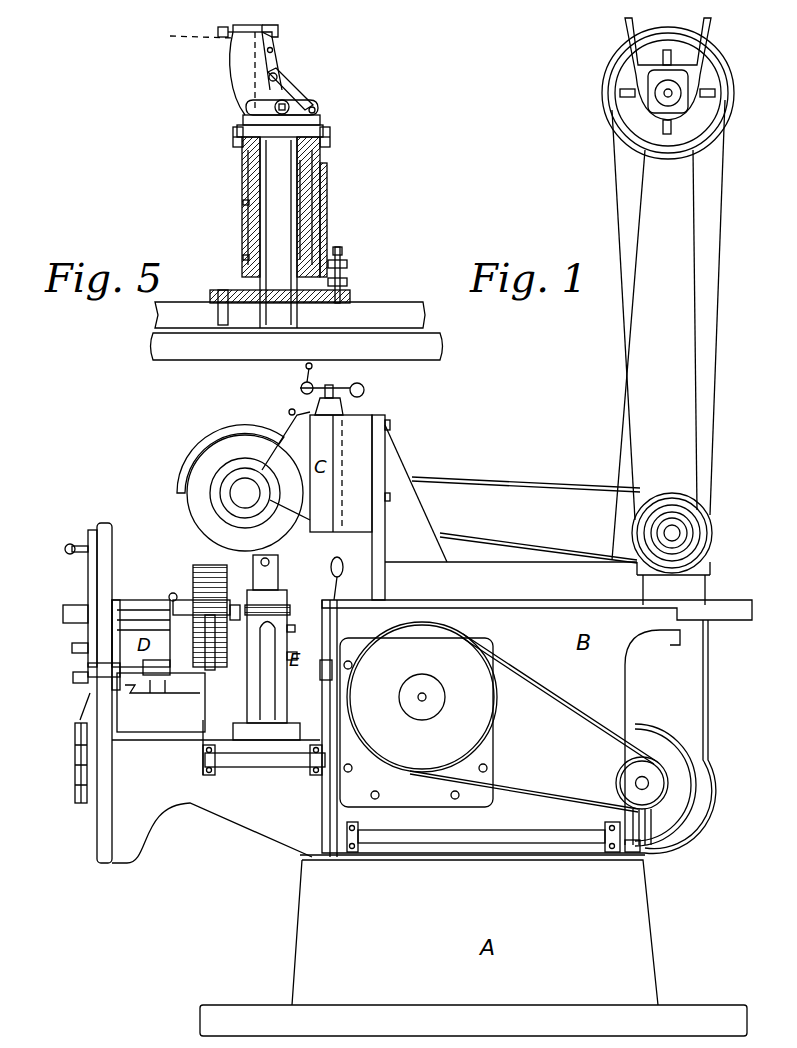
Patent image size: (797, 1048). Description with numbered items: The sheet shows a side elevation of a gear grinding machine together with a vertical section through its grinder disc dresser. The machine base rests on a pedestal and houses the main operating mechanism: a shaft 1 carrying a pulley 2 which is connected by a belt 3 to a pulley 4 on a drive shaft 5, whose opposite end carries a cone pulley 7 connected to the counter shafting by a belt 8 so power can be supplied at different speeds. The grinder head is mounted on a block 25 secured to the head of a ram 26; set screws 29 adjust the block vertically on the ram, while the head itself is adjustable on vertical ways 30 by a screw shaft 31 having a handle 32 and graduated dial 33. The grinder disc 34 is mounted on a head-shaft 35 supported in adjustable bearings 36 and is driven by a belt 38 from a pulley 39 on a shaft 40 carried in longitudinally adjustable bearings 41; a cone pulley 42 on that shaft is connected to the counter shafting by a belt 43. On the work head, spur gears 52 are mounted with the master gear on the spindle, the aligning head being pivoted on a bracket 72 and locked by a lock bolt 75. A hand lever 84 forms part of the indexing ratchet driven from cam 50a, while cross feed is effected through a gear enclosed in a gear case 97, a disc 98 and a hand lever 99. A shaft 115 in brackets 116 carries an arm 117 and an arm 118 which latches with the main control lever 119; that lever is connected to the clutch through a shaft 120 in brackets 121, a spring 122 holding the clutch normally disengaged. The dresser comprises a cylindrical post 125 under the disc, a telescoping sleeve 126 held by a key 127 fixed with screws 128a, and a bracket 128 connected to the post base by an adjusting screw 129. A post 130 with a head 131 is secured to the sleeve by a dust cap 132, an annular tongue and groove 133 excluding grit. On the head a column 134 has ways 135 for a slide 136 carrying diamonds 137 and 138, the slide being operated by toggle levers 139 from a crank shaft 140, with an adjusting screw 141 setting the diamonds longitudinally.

In FIG. 1, the shaft 1 is at (425, 698).
In FIG. 1, the pulley 2 is at (482, 722).
In FIG. 1, the belt 3 is at (562, 698).
In FIG. 1, the pulley 4 is at (616, 783).
In FIG. 1, the drive shaft 5 is at (648, 780).
In FIG. 1, the cone pulley 7 is at (700, 778).
In FIG. 1, the belt 8 is at (697, 310).
In FIG. 1, the block 25 is at (355, 420).
In FIG. 1, the ram 26 is at (480, 560).
In FIG. 1, the set screws 29 is at (390, 425).
In FIG. 1, the vertical ways 30 is at (275, 408).
In FIG. 1, the screw shaft 31 is at (290, 405).
In FIG. 1, the handle 32 is at (301, 386).
In FIG. 1, the graduated dial 33 is at (361, 385).
In FIG. 1, the grinder disc 34 is at (200, 527).
In FIG. 1, the head-shaft 35 is at (235, 493).
In FIG. 1, the adjustable bearings 36 is at (195, 468).
In FIG. 1, the belt 38 is at (500, 480).
In FIG. 1, the pulley 39 is at (648, 502).
In FIG. 1, the shaft 40 is at (680, 528).
In FIG. 1, the longitudinally adjustable bearings 41 is at (712, 555).
In FIG. 1, the cone pulley 42 is at (650, 528).
In FIG. 1, the belt 43 is at (712, 388).
In FIG. 1, the cam 50a is at (75, 760).
In FIG. 1, the spur gears 52 is at (195, 570).
In FIG. 1, the bracket 72 is at (205, 645).
In FIG. 1, the lock bolt 75 is at (212, 670).
In FIG. 1, the hand lever 84 is at (88, 565).
In FIG. 1, the gear case 97 is at (162, 670).
In FIG. 1, the disc 98 is at (108, 683).
In FIG. 1, the hand lever 99 is at (110, 635).
In FIG. 1, the shaft 115 is at (295, 767).
In FIG. 1, the brackets 116 is at (212, 768).
In FIG. 1, the arm 117 is at (203, 745).
In FIG. 1, the arm 118 is at (318, 838).
In FIG. 1, the main control lever 119 is at (338, 625).
In FIG. 1, the shaft 120 is at (530, 843).
In FIG. 1, the brackets 121 is at (352, 852).
In FIG. 1, the spring 122 is at (645, 850).
In FIG. 5, the cylindrical post 125 is at (300, 197).
In FIG. 5, the sleeve 126 is at (245, 182).
In FIG. 5, the key 127 is at (250, 228).
In FIG. 5, the bracket 128 is at (325, 175).
In FIG. 5, the screws 128a is at (248, 203).
In FIG. 5, the adjusting screw 129 is at (347, 280).
In FIG. 5, the post 130 is at (280, 160).
In FIG. 5, the head 131 is at (243, 120).
In FIG. 5, the dust cap 132 is at (238, 140).
In FIG. 5, the annular tongue and groove 133 is at (330, 133).
In FIG. 5, the column 134 is at (245, 65).
In FIG. 5, the ways 135 is at (185, 32).
In FIG. 5, the slide 136 is at (282, 55).
In FIG. 5, the diamond 137 is at (280, 32).
In FIG. 5, the diamond 138 is at (278, 27).
In FIG. 5, the toggle levers 139 is at (290, 92).
In FIG. 5, the crank shaft 140 is at (293, 105).
In FIG. 5, the adjusting screw 141 is at (228, 30).